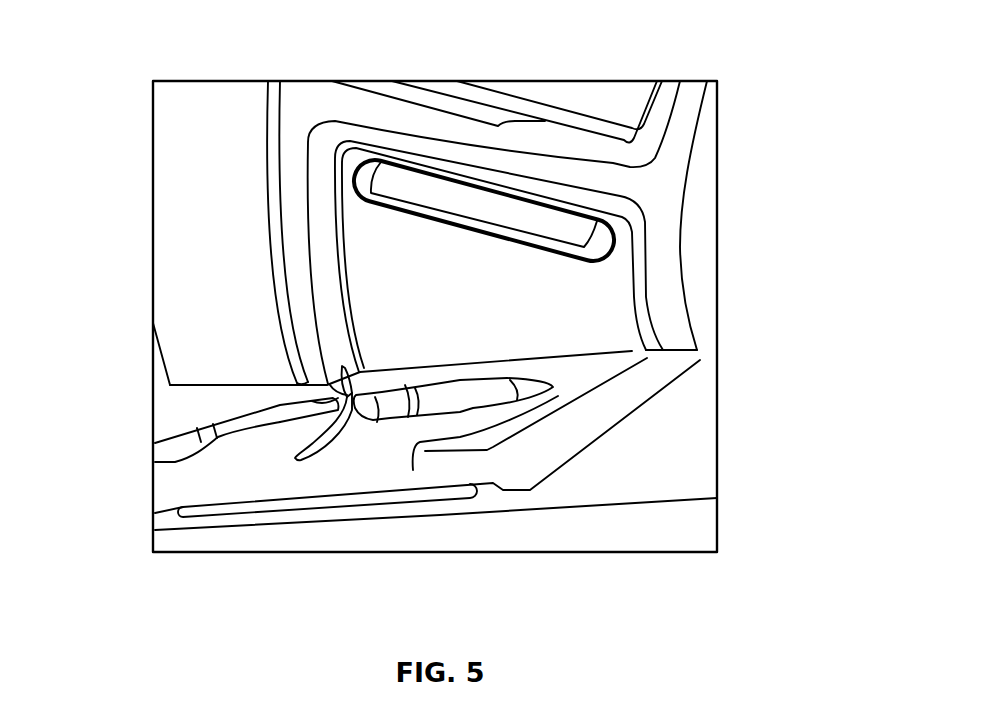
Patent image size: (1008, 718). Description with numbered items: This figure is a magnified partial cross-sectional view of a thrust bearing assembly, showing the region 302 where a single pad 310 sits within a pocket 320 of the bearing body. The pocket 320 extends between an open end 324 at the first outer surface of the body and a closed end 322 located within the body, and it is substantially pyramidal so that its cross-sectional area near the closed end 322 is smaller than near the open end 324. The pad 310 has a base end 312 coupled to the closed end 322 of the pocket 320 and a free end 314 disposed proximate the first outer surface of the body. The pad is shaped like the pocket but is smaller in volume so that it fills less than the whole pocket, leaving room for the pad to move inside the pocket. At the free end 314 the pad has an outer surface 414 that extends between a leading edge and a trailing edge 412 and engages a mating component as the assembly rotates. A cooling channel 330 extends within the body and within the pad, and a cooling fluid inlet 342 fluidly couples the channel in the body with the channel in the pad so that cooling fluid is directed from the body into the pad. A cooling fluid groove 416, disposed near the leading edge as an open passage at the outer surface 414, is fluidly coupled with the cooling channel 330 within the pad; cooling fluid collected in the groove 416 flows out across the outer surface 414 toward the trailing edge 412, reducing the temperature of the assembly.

The vehicle seat base 302 is at (627, 417).
The pad 310 is at (605, 309).
The base end 312 is at (441, 428).
The free end 314 is at (622, 343).
The pocket 320 is at (640, 256).
The closed end 322 is at (466, 405).
The open end 324 is at (638, 203).
The cooling channel 330 is at (236, 428).
The cooling fluid inlet 342 is at (365, 400).
The trailing edge 412 is at (385, 365).
The outer surface 414 is at (353, 164).
The cooling fluid groove 416 is at (636, 222).